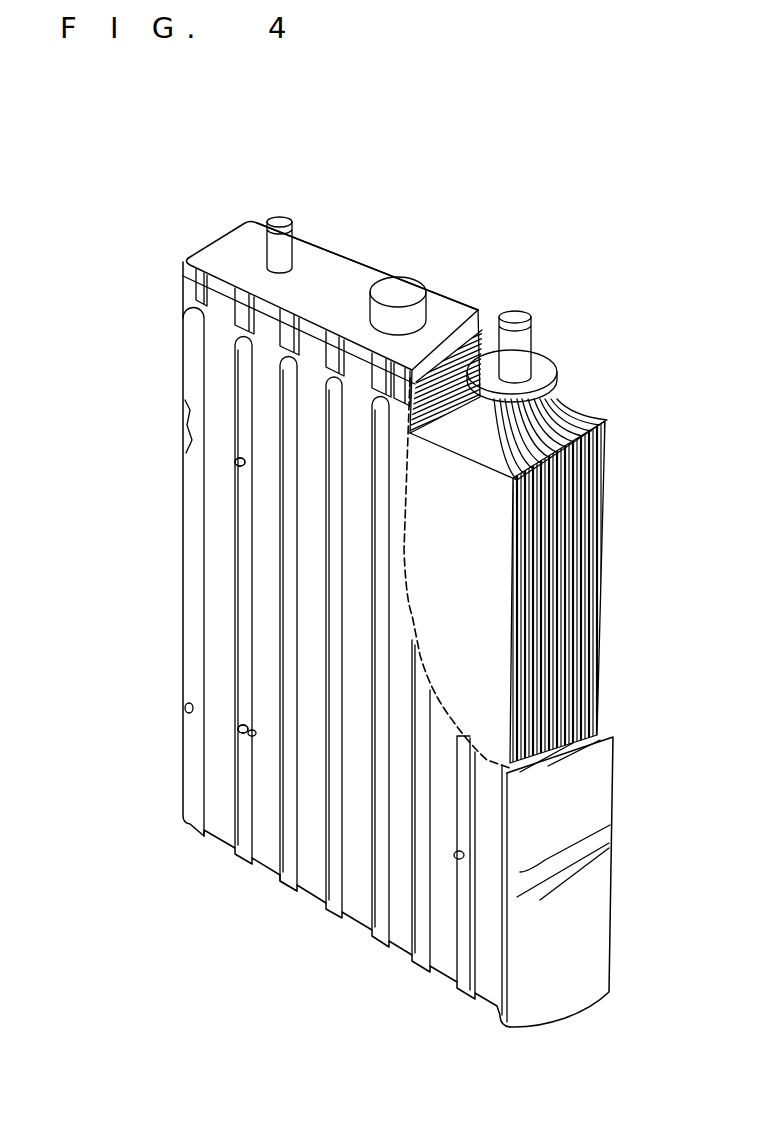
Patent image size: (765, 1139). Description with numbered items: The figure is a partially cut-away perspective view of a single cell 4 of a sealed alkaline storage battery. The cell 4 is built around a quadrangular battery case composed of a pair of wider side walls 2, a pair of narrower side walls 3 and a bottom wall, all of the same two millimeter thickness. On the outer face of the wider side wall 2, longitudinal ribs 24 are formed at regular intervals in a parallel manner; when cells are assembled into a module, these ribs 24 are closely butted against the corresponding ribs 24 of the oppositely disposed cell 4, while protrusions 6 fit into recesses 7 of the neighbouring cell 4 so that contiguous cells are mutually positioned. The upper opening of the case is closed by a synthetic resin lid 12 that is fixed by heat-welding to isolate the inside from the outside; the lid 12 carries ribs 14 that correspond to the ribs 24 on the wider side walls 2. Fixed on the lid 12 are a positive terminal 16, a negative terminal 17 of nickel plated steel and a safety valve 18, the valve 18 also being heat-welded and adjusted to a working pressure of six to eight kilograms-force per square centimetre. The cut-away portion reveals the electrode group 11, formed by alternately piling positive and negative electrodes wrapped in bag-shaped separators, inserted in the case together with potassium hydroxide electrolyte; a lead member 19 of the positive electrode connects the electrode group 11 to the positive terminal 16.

The cell 4 is at (160, 262).
The wider side wall 2 is at (260, 773).
The narrower side wall 3 is at (582, 797).
The protrusion 6 is at (233, 460).
The recess 7 is at (237, 727).
The electrode group 11 is at (577, 498).
The lid 12 is at (337, 262).
The rib 14 is at (198, 288).
The positive terminal 16 is at (515, 318).
The negative terminal 17 is at (277, 222).
The safety valve 18 is at (403, 288).
The lead member 19 is at (577, 407).
The rib 24 is at (285, 820).